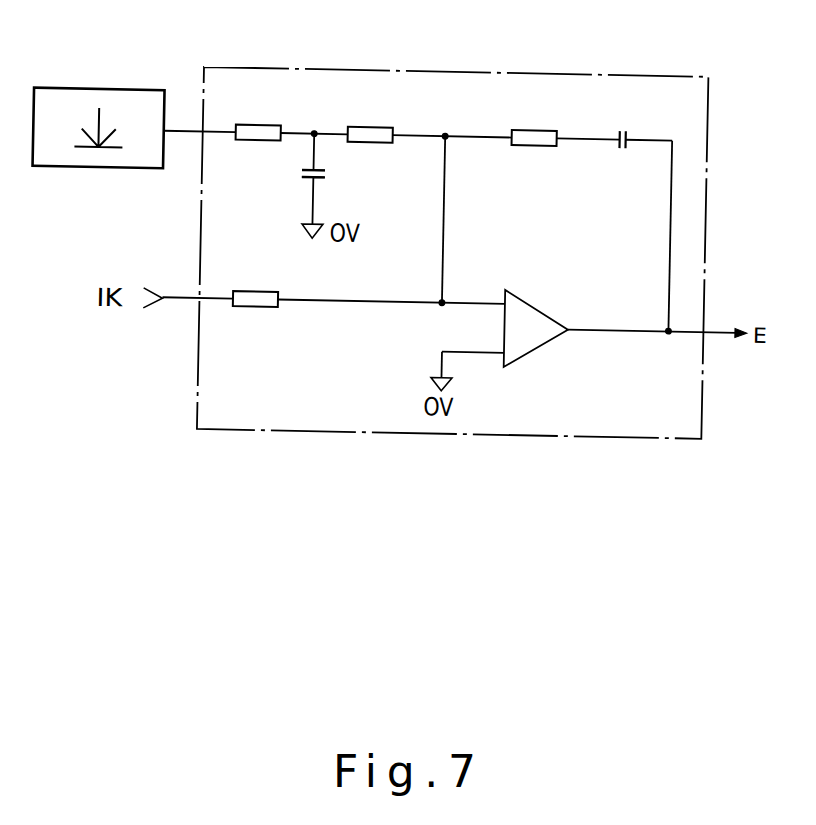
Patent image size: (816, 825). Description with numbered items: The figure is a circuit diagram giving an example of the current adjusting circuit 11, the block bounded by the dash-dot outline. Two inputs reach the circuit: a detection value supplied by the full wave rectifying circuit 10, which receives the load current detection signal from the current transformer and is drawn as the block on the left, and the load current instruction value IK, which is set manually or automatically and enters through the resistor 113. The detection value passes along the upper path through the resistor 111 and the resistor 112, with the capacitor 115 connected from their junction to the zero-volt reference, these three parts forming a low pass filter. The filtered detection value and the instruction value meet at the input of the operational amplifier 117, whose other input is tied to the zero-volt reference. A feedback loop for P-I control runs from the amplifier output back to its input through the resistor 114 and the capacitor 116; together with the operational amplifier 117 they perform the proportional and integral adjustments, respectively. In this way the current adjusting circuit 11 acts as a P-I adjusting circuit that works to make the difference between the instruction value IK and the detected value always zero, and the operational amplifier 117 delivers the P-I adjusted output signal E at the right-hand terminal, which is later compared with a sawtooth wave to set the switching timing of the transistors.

The full wave rectifying circuit 10 is at (108, 91).
The current adjusting circuit 11 is at (500, 67).
The resistor 111 is at (259, 124).
The resistor 112 is at (370, 124).
The resistor 113 is at (257, 290).
The resistor 114 is at (531, 124).
The capacitor 115 is at (328, 170).
The capacitor 116 is at (622, 121).
The operational amplifier 117 is at (527, 294).